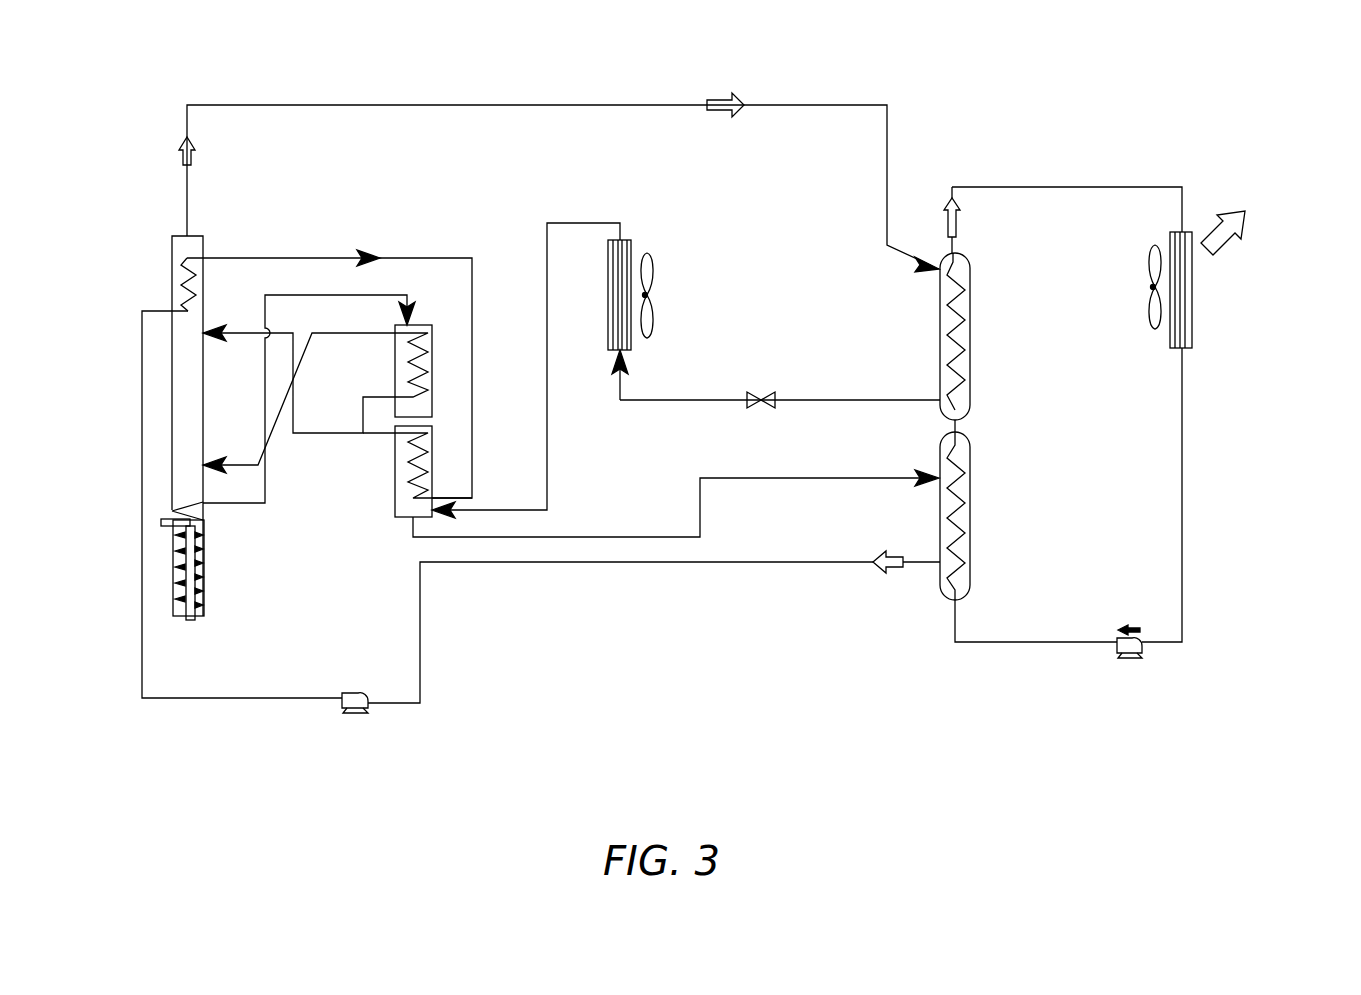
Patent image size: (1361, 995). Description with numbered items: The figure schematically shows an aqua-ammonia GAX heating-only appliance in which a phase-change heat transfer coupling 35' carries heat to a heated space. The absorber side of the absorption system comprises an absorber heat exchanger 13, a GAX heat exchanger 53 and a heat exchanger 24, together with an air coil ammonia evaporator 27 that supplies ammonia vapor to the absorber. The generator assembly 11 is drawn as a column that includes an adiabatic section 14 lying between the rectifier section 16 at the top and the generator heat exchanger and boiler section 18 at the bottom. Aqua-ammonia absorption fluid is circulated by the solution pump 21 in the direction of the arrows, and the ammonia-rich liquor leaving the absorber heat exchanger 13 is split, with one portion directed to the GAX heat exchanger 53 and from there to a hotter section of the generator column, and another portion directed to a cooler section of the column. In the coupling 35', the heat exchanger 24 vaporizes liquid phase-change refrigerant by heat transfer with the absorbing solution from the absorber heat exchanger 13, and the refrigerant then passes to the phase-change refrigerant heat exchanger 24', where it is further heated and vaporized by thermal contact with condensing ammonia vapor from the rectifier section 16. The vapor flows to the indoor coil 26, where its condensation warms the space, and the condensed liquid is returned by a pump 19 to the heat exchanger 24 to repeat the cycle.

The generator assembly 11 is at (108, 398).
The absorber heat exchanger 13 is at (432, 443).
The adiabatic section 14 is at (172, 447).
The rectifier section 16 is at (172, 268).
The generator heat exchanger and boiler section 18 is at (206, 570).
The pump 19 is at (1142, 646).
The solution pump 21 is at (369, 708).
The heat exchanger 24 is at (742, 567).
The phase-change refrigerant heat exchanger 24' is at (1000, 309).
The indoor coil 26 is at (1184, 232).
The air coil ammonia evaporator 27 is at (622, 238).
The phase-change heat transfer coupling 35' is at (1124, 379).
The GAX heat exchanger 53 is at (432, 350).